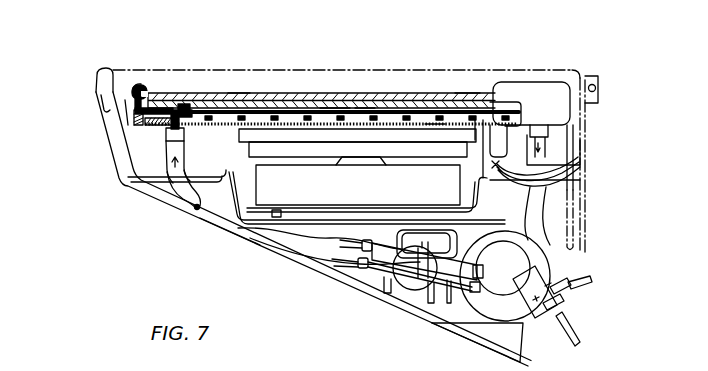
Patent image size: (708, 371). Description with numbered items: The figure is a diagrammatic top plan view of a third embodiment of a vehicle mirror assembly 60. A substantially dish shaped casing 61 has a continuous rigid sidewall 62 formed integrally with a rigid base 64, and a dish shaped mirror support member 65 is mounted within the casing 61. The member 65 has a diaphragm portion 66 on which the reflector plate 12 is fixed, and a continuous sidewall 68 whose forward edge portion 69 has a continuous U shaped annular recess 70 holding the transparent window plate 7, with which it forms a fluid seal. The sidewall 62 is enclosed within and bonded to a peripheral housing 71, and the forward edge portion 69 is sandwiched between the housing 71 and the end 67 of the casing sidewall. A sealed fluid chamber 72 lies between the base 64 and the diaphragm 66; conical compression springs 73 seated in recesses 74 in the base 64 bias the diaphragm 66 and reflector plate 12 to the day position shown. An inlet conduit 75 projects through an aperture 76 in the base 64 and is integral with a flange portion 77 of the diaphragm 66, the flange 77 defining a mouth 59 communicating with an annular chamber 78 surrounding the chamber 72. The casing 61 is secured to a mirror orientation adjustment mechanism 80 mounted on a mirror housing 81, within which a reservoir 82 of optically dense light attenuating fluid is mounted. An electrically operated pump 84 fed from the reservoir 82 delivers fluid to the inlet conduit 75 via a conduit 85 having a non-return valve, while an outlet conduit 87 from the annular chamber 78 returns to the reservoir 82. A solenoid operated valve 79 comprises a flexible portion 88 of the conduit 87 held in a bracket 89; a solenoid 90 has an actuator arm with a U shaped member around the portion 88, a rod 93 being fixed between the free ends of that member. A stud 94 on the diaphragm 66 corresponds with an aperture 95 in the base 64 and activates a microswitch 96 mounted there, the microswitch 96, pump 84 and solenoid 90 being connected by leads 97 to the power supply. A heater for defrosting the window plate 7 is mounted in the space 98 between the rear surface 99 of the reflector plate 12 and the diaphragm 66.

The window plate 7 is at (468, 92).
The reflector plate 12 is at (478, 104).
The mouth 59 is at (165, 116).
The mirror assembly 60 is at (297, 327).
The casing 61 is at (163, 138).
The sidewall 62 is at (143, 118).
The base 64 is at (292, 122).
The mirror support member 65 is at (271, 118).
The diaphragm portion 66 is at (336, 118).
The end of the sidewall 67 is at (134, 113).
The sidewall 68 is at (145, 85).
The forward edge portion 69 is at (133, 95).
The annular recess 70 is at (133, 100).
The peripheral housing 71 is at (133, 85).
The sealed fluid chamber 72 is at (365, 118).
The conical compression springs 73 is at (400, 116).
The recesses 74 is at (436, 118).
The inlet conduit 75 is at (168, 150).
The aperture 76 is at (194, 115).
The flange portion 77 is at (182, 104).
The annular chamber 78 is at (140, 127).
The solenoid operated valve 79 is at (440, 322).
The mirror orientation adjustment mechanism 80 is at (273, 197).
The mirror housing 81 is at (222, 232).
The reservoir 82 is at (313, 245).
The pump 84 is at (508, 313).
The conduit 85 is at (188, 193).
The outlet conduit 87 is at (540, 228).
The flexible portion 88 is at (460, 282).
The bracket 89 is at (366, 254).
The solenoid 90 is at (414, 290).
The rod 93 is at (397, 268).
The stud 94 is at (538, 90).
The aperture 95 is at (597, 129).
The microswitch 96 is at (575, 157).
The leads 97 is at (588, 284).
The space 98 is at (238, 95).
The rear surface 99 is at (251, 107).